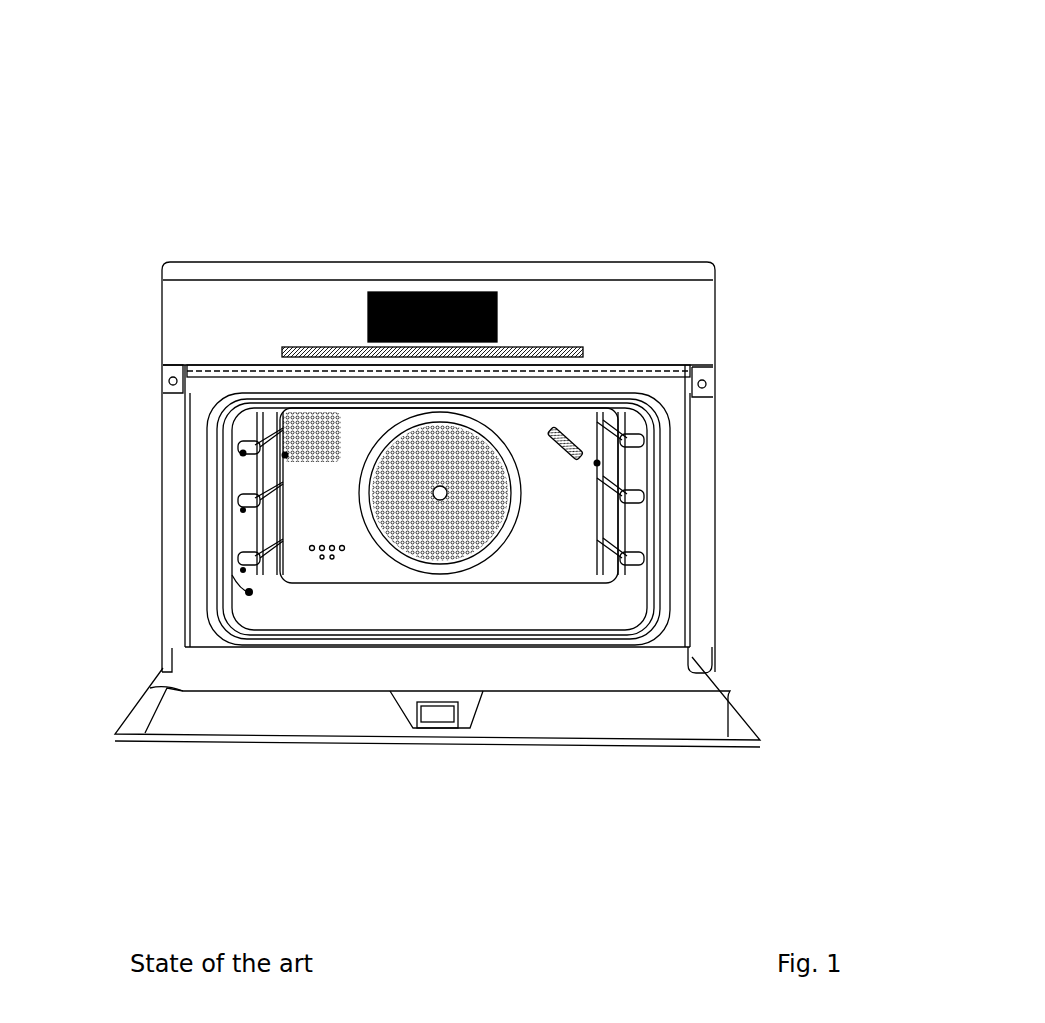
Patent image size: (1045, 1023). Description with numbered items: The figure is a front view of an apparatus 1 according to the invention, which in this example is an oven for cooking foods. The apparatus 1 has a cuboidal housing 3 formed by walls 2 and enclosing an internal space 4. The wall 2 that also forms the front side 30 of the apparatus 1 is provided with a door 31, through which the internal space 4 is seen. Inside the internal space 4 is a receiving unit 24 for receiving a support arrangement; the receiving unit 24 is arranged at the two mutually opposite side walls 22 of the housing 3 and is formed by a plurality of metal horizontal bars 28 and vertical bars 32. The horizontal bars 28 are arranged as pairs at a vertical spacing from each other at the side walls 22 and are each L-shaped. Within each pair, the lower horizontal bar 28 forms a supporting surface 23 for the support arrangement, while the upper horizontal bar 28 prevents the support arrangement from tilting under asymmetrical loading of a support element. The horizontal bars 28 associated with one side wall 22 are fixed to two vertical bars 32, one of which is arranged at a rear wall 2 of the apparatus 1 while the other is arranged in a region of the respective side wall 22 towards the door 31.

The apparatus 1 is at (211, 243).
The wall 2 is at (563, 388).
The side wall 22 is at (680, 452).
The housing 3 is at (716, 555).
The internal space 4 is at (560, 553).
The supporting surface 23 is at (280, 442).
The receiving unit 24 is at (249, 592).
The horizontal bar 28 is at (624, 494).
The front side 30 is at (554, 312).
The door 31 is at (598, 745).
The vertical bar 32 is at (283, 453).